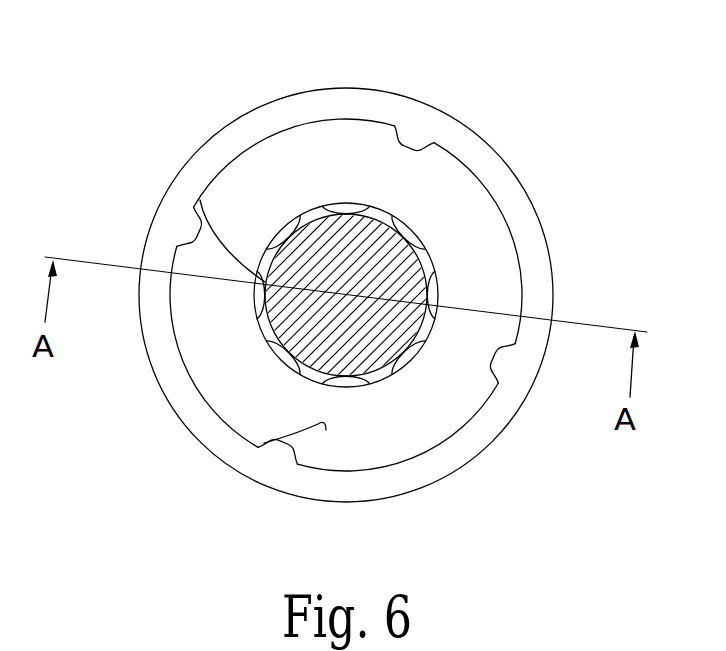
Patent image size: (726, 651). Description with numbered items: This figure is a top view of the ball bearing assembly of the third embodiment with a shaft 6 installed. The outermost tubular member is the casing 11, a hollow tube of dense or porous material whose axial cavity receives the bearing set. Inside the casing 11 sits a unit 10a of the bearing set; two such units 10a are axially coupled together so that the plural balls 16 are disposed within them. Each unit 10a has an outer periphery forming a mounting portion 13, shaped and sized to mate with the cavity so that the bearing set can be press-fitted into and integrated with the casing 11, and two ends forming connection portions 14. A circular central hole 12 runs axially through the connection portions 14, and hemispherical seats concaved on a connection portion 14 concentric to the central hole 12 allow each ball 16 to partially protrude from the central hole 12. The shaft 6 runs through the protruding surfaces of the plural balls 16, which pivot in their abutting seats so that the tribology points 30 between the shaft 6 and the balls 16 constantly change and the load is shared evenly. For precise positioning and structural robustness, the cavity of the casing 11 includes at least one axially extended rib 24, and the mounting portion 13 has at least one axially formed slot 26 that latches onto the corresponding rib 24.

The shaft 6 is at (383, 325).
The unit 10a is at (488, 248).
The casing 11 is at (492, 172).
The central hole 12 is at (313, 207).
The mounting portion 13 is at (198, 392).
The connection portion 14 is at (255, 192).
The ball 16 is at (348, 205).
The rib 24 is at (278, 448).
The slot 26 is at (326, 430).
The tribology point 30 is at (200, 200).